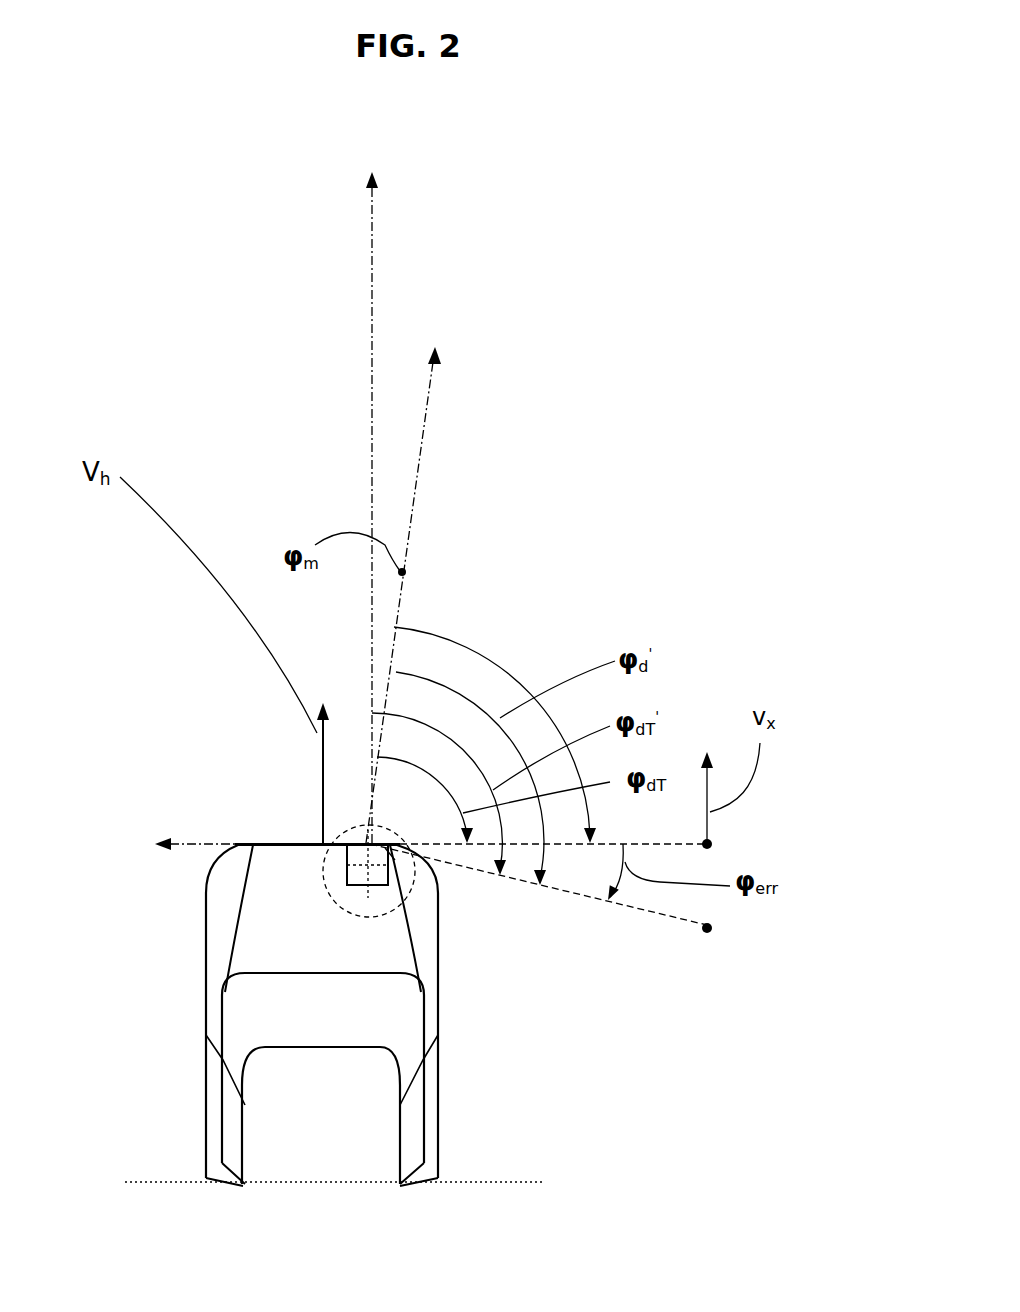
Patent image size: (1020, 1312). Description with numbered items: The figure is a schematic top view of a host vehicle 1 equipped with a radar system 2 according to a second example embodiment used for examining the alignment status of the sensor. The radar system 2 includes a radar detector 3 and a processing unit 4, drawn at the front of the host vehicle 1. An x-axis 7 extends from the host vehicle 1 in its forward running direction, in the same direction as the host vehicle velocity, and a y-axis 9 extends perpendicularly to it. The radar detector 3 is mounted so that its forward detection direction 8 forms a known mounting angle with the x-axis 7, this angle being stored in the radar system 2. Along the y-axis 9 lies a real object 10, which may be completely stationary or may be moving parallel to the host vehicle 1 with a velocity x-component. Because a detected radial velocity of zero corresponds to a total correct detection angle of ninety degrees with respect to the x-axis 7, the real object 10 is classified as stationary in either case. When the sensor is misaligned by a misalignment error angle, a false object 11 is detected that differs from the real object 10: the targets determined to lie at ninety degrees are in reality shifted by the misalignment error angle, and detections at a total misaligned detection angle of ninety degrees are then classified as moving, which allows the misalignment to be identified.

The host vehicle 1 is at (307, 1110).
The radar system 2 is at (335, 886).
The radar detector 3 is at (407, 867).
The processing unit 4 is at (402, 883).
The x-axis 7 is at (372, 245).
The forward detection direction 8 is at (420, 490).
The y-axis 9 is at (222, 842).
The real object 10 is at (715, 846).
The false object 11 is at (712, 928).